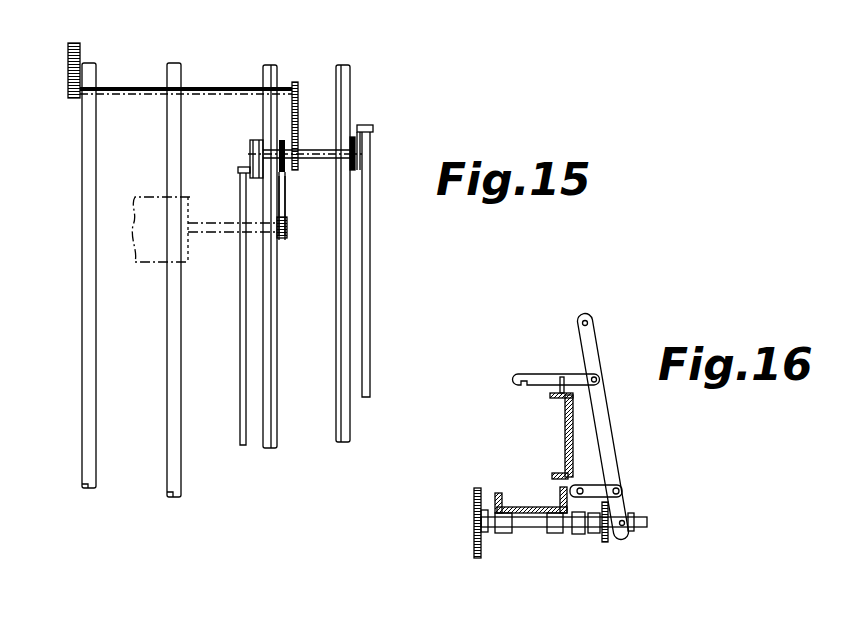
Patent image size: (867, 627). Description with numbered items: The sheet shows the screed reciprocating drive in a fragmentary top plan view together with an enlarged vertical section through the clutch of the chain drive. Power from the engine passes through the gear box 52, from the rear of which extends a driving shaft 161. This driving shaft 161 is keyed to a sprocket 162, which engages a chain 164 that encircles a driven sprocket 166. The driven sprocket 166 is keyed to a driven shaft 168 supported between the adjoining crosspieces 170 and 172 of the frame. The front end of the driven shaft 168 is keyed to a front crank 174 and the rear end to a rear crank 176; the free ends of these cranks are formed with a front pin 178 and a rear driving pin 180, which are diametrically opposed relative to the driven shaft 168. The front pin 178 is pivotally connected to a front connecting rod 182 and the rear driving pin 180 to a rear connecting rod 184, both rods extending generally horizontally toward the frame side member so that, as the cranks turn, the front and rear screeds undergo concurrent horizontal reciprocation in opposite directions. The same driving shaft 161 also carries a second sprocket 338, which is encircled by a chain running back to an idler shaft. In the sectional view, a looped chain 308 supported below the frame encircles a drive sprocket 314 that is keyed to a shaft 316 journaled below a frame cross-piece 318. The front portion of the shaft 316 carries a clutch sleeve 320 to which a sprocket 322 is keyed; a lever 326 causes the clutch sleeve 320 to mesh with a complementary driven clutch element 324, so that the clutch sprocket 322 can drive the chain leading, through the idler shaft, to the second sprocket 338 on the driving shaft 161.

In FIG. 15, the gear box 52 is at (190, 197).
In FIG. 15, the driving shaft 161 is at (208, 232).
In FIG. 15, the sprocket 162 is at (286, 237).
In FIG. 15, the chain 164 is at (285, 180).
In FIG. 15, the driven sprocket 166 is at (280, 143).
In FIG. 15, the driven shaft 168 is at (330, 150).
In FIG. 15, the crosspiece 170 is at (277, 337).
In FIG. 15, the crosspiece 172 is at (336, 381).
In FIG. 15, the front crank 174 is at (250, 152).
In FIG. 15, the rear crank 176 is at (360, 163).
In FIG. 15, the front pin 178 is at (240, 172).
In FIG. 15, the rear driving pin 180 is at (374, 129).
In FIG. 15, the front connecting rod 182 is at (240, 300).
In FIG. 15, the rear connecting rod 184 is at (370, 255).
In FIG. 15, the second sprocket 338 is at (300, 147).
In FIG. 16, the looped chain 308 is at (474, 492).
In FIG. 16, the drive sprocket 314 is at (474, 540).
In FIG. 16, the shaft 316 is at (524, 527).
In FIG. 16, the frame cross-piece 318 is at (510, 507).
In FIG. 16, the clutch sleeve 320 is at (633, 512).
In FIG. 16, the sprocket 322 is at (605, 537).
In FIG. 16, the driven clutch element 324 is at (578, 534).
In FIG. 16, the lever 326 is at (613, 457).